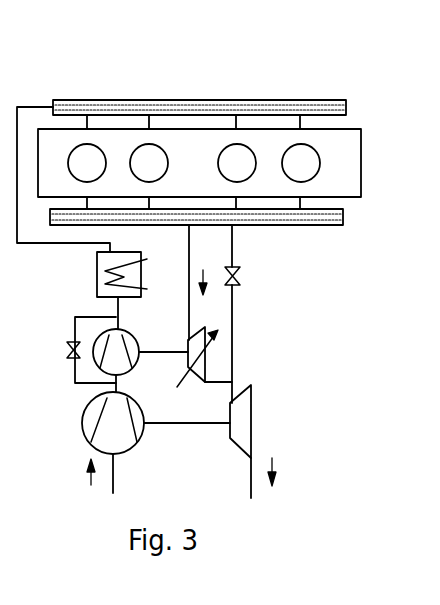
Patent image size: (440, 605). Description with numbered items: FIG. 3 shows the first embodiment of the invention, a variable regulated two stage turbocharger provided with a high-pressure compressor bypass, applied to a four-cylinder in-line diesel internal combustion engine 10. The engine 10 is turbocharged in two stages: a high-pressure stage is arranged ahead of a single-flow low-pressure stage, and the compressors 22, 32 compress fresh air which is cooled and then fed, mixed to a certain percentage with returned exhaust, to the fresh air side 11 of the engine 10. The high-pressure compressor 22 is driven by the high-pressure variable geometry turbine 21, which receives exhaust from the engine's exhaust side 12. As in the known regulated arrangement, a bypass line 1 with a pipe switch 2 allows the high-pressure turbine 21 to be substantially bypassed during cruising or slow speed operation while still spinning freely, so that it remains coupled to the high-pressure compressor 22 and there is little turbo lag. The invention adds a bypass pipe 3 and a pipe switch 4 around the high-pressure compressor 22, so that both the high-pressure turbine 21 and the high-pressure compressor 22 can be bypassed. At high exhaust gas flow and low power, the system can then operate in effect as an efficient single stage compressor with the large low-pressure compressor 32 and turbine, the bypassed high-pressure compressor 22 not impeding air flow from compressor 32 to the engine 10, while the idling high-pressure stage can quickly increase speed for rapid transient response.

The internal combustion engine 10 is at (352, 78).
The fresh air side 11 is at (72, 108).
The exhaust manifold 12 is at (328, 226).
The bypass line 1 is at (233, 247).
The pipe switch 2 is at (242, 273).
The bypass pipe 3 is at (82, 310).
The pipe switch 4 is at (62, 355).
The high-pressure variable geometry turbine 21 is at (193, 365).
The compressor 22 is at (97, 340).
The compressor 32 is at (93, 417).